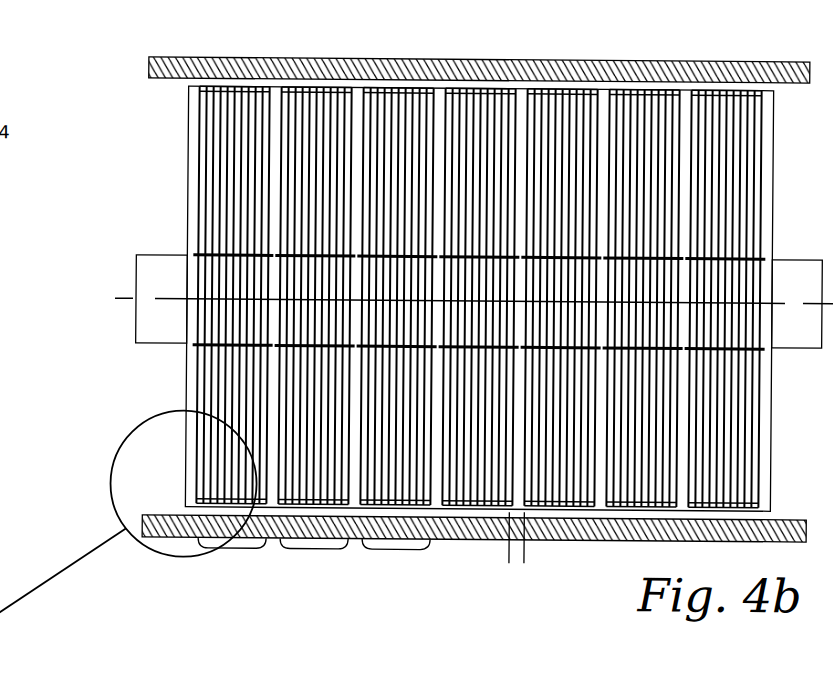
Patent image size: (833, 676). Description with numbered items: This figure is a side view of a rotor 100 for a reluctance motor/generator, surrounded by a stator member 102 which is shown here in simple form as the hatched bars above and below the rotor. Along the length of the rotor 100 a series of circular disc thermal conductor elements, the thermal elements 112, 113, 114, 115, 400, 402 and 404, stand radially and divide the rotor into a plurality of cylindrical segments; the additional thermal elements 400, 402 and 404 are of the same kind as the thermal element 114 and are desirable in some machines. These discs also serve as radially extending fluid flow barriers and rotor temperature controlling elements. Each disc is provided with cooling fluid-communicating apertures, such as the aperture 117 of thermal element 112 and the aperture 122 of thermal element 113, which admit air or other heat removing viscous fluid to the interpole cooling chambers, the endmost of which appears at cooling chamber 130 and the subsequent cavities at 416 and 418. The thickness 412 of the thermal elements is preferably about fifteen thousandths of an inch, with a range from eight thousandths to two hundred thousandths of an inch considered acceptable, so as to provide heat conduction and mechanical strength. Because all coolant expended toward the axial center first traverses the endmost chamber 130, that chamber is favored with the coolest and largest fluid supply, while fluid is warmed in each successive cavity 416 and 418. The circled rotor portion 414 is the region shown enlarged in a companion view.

The rotor 100 is at (168, 394).
The stator member 102 is at (357, 509).
The thermal element 112 is at (198, 88).
The thermal element 113 is at (280, 88).
The thermal element 114 is at (362, 88).
The thermal element 115 is at (444, 88).
The cooling fluid-communicating aperture 117 is at (772, 88).
The cooling fluid-communicating aperture 122 is at (2, 191).
The cooling chamber 130 is at (233, 550).
The thermal element 400 is at (526, 88).
The thermal element 402 is at (608, 88).
The thermal element 404 is at (690, 88).
The thickness 412 is at (478, 552).
The rotor portion 414 is at (183, 560).
The cavity 416 is at (315, 550).
The cavity 418 is at (398, 550).